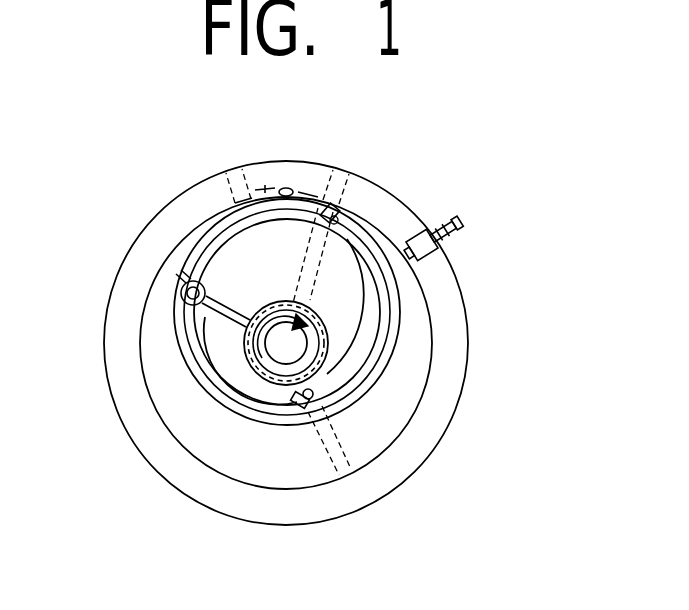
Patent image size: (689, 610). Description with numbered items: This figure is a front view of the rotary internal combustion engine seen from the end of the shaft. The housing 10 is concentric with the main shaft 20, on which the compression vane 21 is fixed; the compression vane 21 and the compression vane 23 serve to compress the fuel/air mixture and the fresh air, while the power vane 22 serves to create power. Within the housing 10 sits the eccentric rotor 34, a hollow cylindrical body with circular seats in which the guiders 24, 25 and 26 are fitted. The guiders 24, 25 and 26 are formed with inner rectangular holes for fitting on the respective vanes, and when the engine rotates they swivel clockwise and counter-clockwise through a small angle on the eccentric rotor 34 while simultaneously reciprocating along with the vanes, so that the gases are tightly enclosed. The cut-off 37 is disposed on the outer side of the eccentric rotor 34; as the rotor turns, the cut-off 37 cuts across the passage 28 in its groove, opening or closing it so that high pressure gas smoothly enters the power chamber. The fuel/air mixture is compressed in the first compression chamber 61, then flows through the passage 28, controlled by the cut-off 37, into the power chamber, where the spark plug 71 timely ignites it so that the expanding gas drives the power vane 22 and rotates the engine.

The housing 10 is at (437, 420).
The main shaft 20 is at (340, 332).
The compression vane 21 is at (186, 286).
The power vane 22 is at (362, 228).
The compression vane 23 is at (352, 470).
The guider 24 is at (200, 273).
The guider 25 is at (348, 214).
The guider 26 is at (300, 400).
The passage 28 is at (284, 188).
The eccentric rotor 34 is at (380, 338).
The cut-off 37 is at (407, 290).
The first compression chamber 61 is at (417, 378).
The spark plug 71 is at (458, 232).